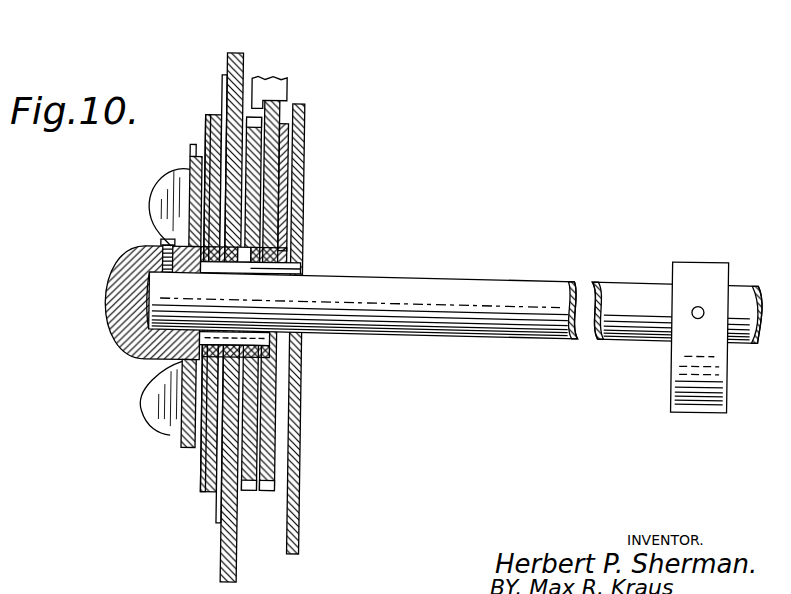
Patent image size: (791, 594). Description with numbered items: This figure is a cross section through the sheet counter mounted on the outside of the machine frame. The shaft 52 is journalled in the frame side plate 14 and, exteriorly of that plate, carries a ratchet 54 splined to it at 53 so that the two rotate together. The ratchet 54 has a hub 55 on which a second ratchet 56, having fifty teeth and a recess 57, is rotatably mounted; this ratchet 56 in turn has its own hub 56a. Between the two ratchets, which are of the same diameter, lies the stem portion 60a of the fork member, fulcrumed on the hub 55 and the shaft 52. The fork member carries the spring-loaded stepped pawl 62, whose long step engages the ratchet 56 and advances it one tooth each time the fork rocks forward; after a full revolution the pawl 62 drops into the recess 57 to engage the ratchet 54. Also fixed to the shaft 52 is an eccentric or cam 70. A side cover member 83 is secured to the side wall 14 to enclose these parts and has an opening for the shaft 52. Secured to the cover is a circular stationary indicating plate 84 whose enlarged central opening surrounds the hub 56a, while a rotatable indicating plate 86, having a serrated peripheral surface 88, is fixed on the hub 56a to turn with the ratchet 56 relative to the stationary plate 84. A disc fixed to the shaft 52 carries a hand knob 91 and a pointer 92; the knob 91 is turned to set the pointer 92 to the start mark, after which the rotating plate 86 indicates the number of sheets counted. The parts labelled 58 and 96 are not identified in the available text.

The side plate 14 is at (300, 514).
The shaft 52 is at (634, 284).
The spline 53 is at (300, 270).
The ratchet 54 is at (296, 197).
The hub 55 is at (252, 259).
The ratchet 56 is at (254, 175).
The hub 56a is at (200, 246).
The recess 57 is at (268, 150).
The flange 58 is at (268, 362).
The stem portion 60a is at (282, 140).
The stepped pawl 62 is at (284, 88).
The eccentric or cam 70 is at (716, 406).
The side cover member 83 is at (236, 53).
The stationary indicating plate 84 is at (222, 64).
The rotatable indicating plate 86 is at (206, 133).
The serrated peripheral surface 88 is at (212, 115).
The hand knob 91 is at (178, 168).
The pointer 92 is at (189, 151).
The plate 96 is at (190, 448).